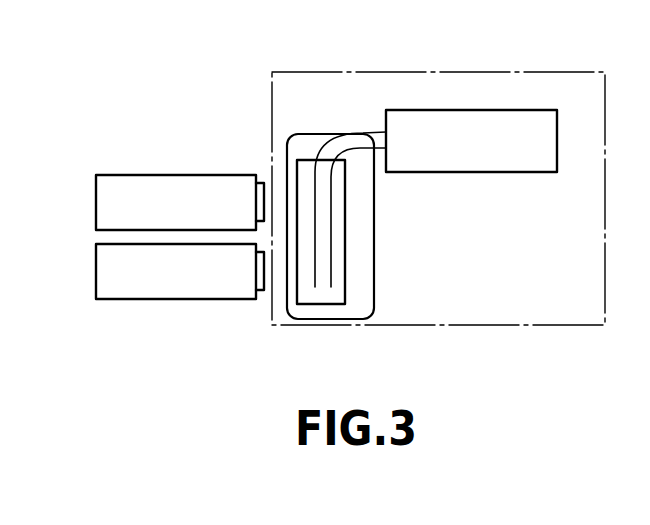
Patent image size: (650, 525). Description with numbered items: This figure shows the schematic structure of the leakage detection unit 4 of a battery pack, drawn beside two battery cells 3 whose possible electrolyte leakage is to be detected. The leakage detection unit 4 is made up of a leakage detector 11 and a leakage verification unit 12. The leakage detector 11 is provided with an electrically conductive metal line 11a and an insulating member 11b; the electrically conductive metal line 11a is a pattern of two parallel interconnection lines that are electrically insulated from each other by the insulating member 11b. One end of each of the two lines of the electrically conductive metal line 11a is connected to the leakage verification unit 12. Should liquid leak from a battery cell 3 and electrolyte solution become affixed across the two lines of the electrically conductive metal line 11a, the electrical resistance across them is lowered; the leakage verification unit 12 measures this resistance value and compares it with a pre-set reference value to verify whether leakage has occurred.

The battery cell 3 is at (96, 191).
The leakage detection unit 4 is at (465, 71).
The leakage detector 11 is at (374, 239).
The electrically conductive metal line 11a is at (314, 172).
The insulating member 11b is at (345, 268).
The leakage verification unit 12 is at (527, 172).